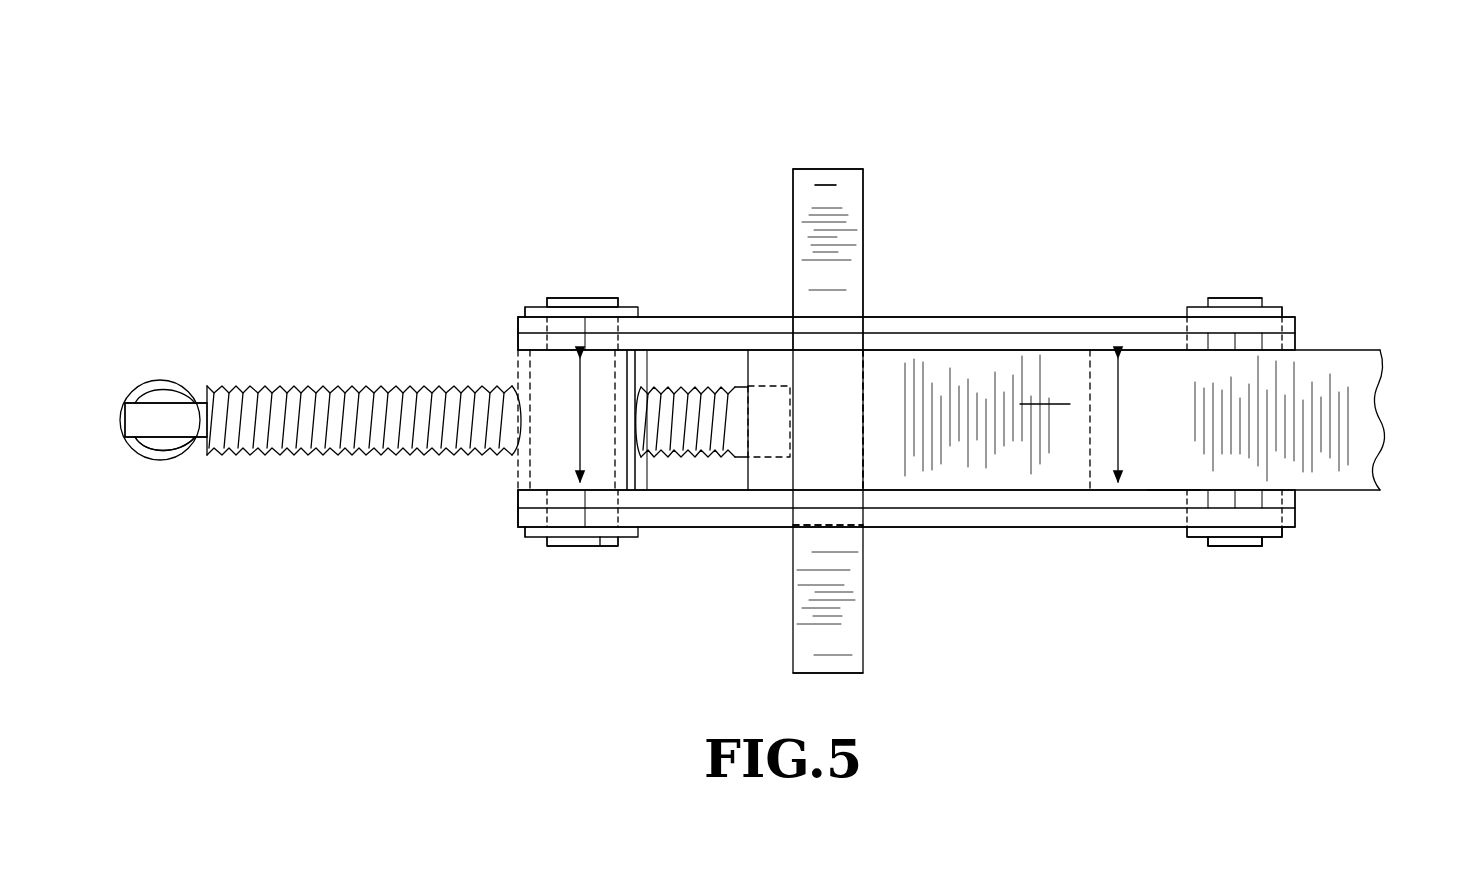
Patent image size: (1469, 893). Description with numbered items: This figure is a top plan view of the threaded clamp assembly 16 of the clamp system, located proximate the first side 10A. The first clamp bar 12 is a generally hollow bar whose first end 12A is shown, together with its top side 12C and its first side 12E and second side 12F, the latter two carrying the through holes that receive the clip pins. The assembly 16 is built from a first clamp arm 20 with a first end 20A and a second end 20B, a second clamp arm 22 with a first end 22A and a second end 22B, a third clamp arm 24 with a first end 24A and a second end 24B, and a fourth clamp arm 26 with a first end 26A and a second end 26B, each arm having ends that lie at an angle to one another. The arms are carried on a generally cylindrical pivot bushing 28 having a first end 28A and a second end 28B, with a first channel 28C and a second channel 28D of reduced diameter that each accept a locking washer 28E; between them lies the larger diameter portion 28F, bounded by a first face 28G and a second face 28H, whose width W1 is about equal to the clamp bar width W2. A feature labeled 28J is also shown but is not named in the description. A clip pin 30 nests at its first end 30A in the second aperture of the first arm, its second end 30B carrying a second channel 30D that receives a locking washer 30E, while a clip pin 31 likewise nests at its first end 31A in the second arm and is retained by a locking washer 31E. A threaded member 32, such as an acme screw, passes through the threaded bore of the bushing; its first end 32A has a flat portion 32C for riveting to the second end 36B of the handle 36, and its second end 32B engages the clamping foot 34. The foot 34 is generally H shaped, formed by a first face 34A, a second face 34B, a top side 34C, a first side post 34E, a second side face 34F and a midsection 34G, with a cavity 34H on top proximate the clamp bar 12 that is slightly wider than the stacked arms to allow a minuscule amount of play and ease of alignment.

The first side 10A is at (690, 126).
The first clamp bar 12 is at (1058, 452).
The first end 12A is at (745, 492).
The top side 12C is at (1045, 395).
The first side 12E is at (1147, 492).
The second side 12F is at (1090, 350).
The threaded clamp assembly 16 is at (530, 182).
The first clamp arm 20 is at (998, 500).
The first end 20A is at (518, 500).
The second end 20B is at (1297, 500).
The second clamp arm 22 is at (938, 515).
The first end 22A is at (518, 520).
The second end 22B is at (1297, 520).
The third clamp arm 24 is at (1025, 338).
The first end 24A is at (518, 342).
The second end 24B is at (1297, 342).
The fourth clamp arm 26 is at (966, 314).
The first end 26A is at (518, 322).
The second end 26B is at (1297, 322).
The pivot bushing 28 is at (486, 422).
The larger diameter portion 28F is at (513, 482).
The first end 28A is at (573, 548).
The second end 28B is at (573, 300).
The first channel 28C is at (596, 538).
The second channel 28D is at (588, 318).
The locking washer 28E is at (527, 310).
The first face 28G is at (636, 495).
The second face 28H is at (636, 346).
The threaded bore of first fastener 28J is at (524, 432).
The clip pin 30 is at (1244, 348).
The first end 30A is at (1232, 538).
The second end 30B is at (1248, 296).
The second channel 30D is at (1230, 297).
The locking washer 30E is at (1283, 305).
The clip pin 31 is at (1256, 616).
The first end 31A is at (1250, 548).
The locking washer 31E is at (1274, 548).
The threaded member 32 is at (297, 382).
The first end 32A is at (122, 420).
The second end 32B is at (772, 388).
The flat portion 32C is at (160, 418).
The clamping foot 34 is at (809, 368).
The second side face 34F is at (810, 165).
The first face 34A is at (792, 225).
The second face 34B is at (864, 212).
The top side 34C is at (835, 205).
The first side post 34E is at (838, 675).
The midsection 34G is at (858, 393).
The cavity 34H is at (912, 528).
The handle 36 is at (142, 462).
The second end 36B is at (168, 448).
The width of larger diameter portion W1 is at (579, 420).
The width of clamp bars W2 is at (1116, 420).